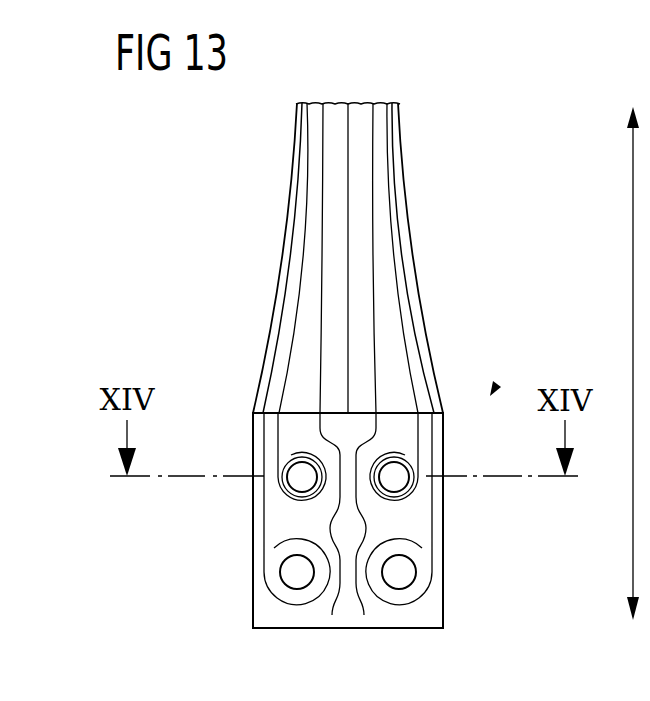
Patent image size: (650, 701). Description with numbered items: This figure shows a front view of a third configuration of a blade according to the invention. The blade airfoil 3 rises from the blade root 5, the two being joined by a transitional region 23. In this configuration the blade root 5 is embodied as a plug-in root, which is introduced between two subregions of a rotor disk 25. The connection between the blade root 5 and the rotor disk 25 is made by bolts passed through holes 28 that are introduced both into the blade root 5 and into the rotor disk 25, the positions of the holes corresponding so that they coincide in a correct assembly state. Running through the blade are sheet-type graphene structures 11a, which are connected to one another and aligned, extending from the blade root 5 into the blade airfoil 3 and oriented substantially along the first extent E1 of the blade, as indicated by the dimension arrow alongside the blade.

The blade airfoil 3 is at (420, 278).
The blade root 5 is at (443, 428).
The sheet-type graphene structures 11a is at (373, 182).
The transitional region 23 is at (250, 411).
The rotor disk 25 is at (494, 390).
The holes 28 is at (395, 479).
The first extent E1 is at (633, 277).